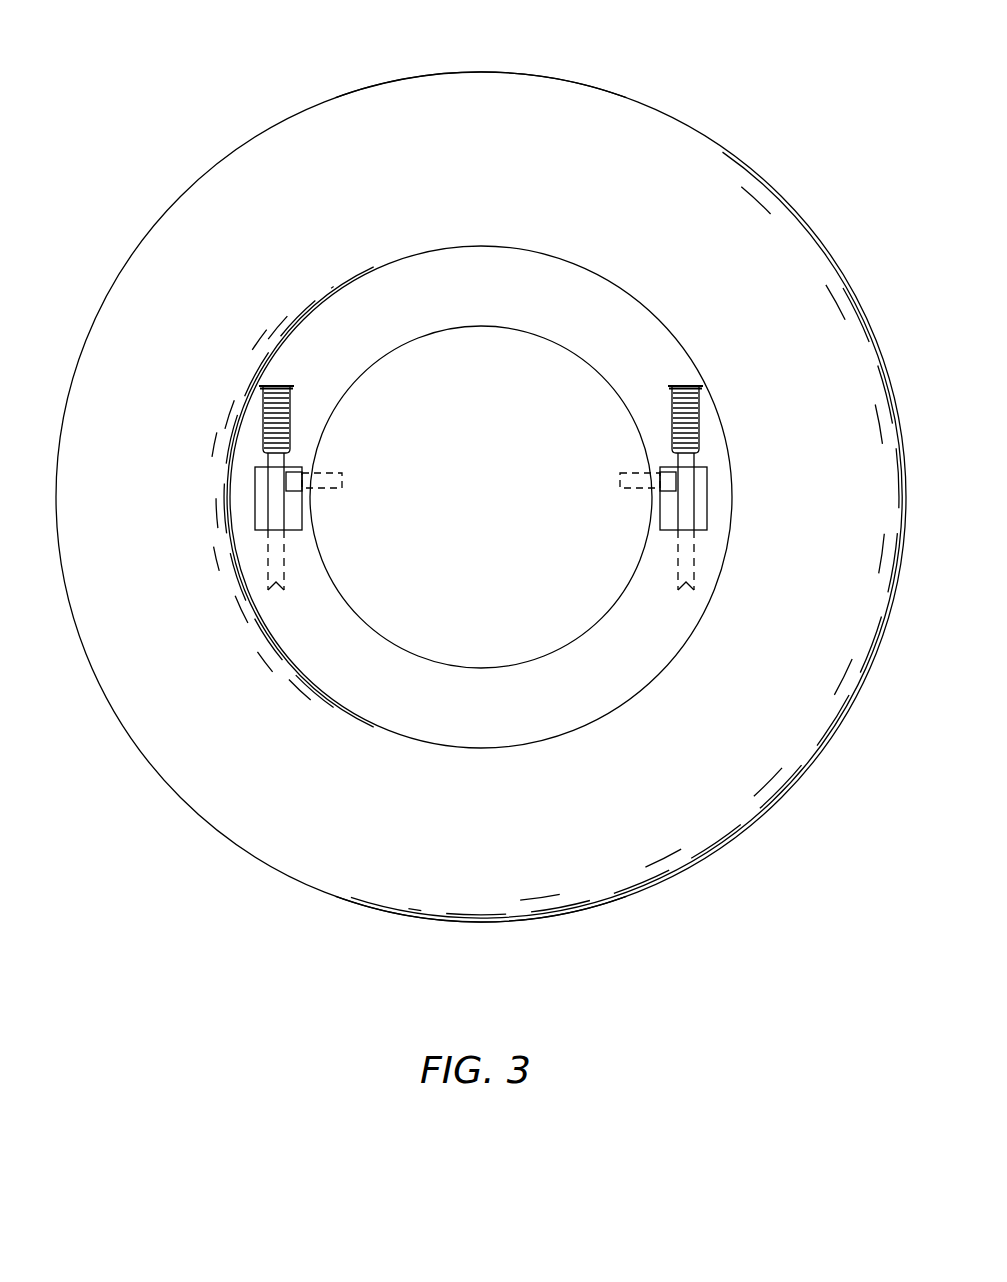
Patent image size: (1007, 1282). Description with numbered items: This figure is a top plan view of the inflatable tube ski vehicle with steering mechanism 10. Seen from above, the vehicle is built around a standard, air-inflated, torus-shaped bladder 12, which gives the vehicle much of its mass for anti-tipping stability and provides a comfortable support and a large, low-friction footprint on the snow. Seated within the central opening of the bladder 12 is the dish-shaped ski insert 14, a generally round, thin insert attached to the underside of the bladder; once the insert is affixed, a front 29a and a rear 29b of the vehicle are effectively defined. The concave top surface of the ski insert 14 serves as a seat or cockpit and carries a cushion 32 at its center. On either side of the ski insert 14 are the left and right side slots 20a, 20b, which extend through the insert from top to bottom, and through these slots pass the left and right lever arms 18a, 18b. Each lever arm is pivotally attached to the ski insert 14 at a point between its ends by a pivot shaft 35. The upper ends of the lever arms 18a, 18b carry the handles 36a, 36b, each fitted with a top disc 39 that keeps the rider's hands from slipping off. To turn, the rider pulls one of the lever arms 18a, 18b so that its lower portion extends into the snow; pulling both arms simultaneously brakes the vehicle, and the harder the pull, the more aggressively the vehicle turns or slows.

The inflatable tube ski vehicle with steering mechanism 10 is at (246, 941).
The bladder 12 is at (795, 760).
The dish-shaped ski insert 14 is at (413, 722).
The left lever arm 18a is at (280, 463).
The right lever arm 18b is at (683, 462).
The left side slot 20a is at (296, 523).
The right side slot 20b is at (667, 523).
The front 29a is at (519, 86).
The rear 29b is at (541, 893).
The cushion 32 is at (344, 607).
The pivot shaft 35 is at (342, 483).
The left handle 36a is at (270, 413).
The right handle 36b is at (692, 412).
The top disc 39 is at (289, 387).